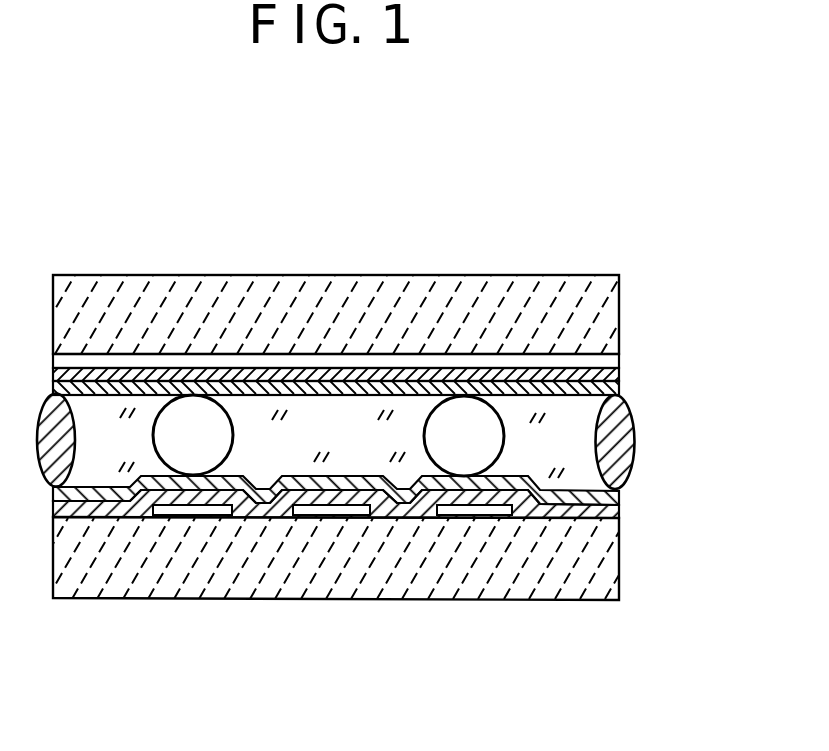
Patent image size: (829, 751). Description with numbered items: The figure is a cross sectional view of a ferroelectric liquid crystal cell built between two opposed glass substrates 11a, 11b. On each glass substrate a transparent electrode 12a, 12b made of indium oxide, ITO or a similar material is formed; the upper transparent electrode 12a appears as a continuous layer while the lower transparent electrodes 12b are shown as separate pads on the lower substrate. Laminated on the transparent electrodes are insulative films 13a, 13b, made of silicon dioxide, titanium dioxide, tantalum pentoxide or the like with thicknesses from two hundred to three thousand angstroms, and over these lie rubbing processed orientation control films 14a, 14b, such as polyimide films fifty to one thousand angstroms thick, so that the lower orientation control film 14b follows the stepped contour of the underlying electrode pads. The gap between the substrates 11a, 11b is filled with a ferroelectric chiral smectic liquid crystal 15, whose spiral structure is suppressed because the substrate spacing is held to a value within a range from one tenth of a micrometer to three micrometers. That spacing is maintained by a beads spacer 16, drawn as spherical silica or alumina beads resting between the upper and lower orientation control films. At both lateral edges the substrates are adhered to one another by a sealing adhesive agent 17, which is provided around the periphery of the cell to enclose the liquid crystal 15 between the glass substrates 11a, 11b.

The glass substrate 11a is at (608, 277).
The transparent electrode 12a is at (622, 357).
The insulative film 13a is at (622, 373).
The orientation control film 14a is at (622, 396).
The ferroelectric chiral smectic liquid crystal 15 is at (304, 415).
The beads spacer 16 is at (452, 413).
The sealing adhesive agent 17 is at (637, 447).
The orientation control film 14b is at (620, 500).
The insulative film 13b is at (622, 518).
The transparent electrode 12b is at (485, 513).
The glass substrate 11b is at (598, 578).